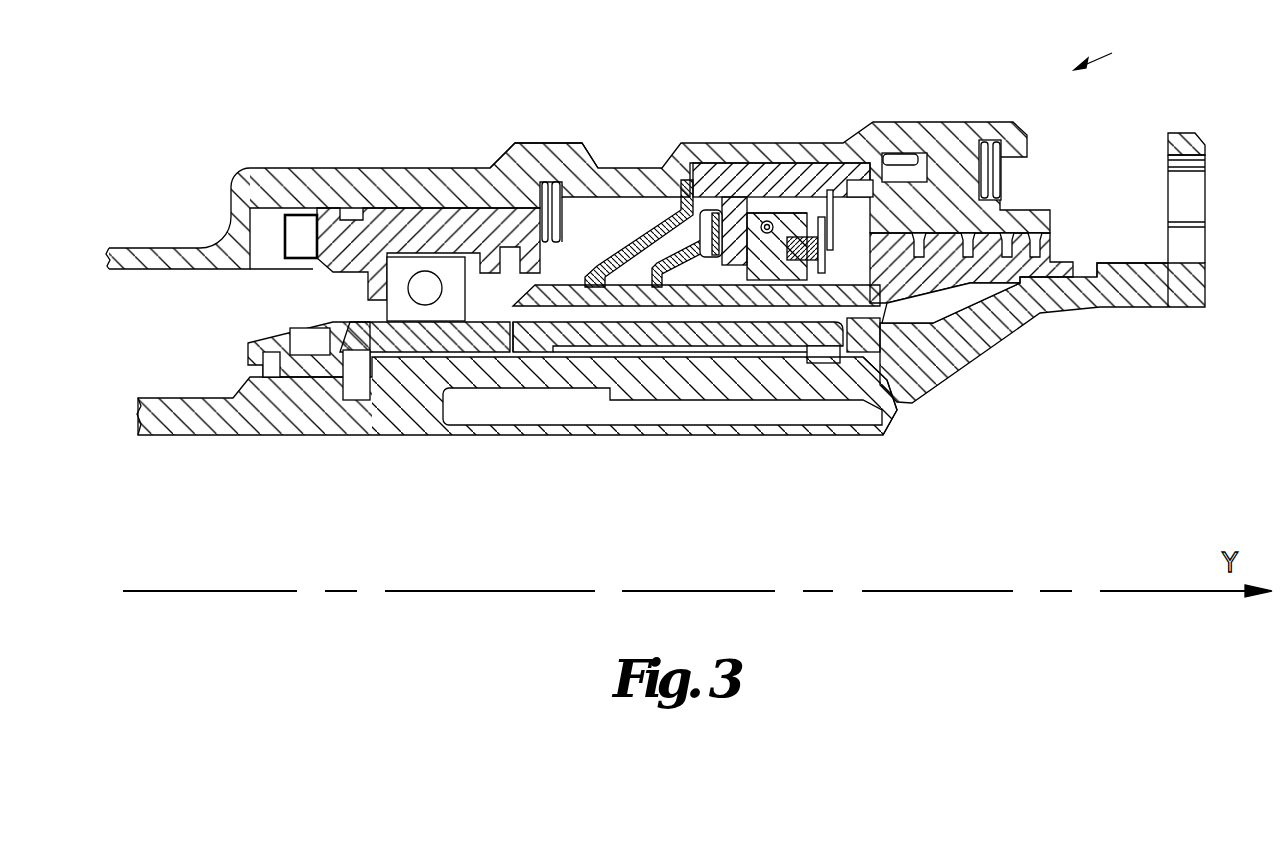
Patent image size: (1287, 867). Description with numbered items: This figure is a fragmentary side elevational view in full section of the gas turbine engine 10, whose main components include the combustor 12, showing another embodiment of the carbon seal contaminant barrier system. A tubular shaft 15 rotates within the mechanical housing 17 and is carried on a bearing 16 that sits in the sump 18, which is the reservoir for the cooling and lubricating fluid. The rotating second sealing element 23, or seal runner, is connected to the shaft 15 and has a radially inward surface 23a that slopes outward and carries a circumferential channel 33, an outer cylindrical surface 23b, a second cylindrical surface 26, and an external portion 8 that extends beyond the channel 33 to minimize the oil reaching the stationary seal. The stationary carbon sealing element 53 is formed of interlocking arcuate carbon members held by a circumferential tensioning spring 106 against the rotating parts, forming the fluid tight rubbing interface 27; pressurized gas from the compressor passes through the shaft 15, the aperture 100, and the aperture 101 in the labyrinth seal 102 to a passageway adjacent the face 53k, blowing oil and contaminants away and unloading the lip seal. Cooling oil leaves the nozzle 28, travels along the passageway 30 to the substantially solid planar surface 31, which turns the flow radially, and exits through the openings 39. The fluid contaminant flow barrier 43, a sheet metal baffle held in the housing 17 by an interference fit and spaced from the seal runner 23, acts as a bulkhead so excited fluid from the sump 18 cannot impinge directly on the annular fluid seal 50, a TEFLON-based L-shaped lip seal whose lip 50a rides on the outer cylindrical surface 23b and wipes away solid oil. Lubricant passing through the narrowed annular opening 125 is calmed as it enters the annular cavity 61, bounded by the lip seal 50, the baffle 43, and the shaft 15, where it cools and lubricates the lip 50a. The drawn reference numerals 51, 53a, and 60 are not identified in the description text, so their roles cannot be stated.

The external portion 8 is at (545, 250).
The gas turbine engine 10 is at (1109, 53).
The combustor 12 is at (697, 551).
The tubular shaft 15 is at (183, 413).
The bearing 16 is at (387, 297).
The mechanical housing 17 is at (968, 137).
The sump 18 is at (608, 238).
The second sealing element 23 is at (592, 352).
The radially inward surface 23a is at (512, 352).
The outer cylindrical surface 23b is at (563, 283).
The second cylindrical surface 26 is at (822, 278).
The rubbing interface 27 is at (840, 363).
The nozzle 28 is at (300, 368).
The passageway 30 is at (767, 353).
The planar surface 31 is at (887, 377).
The circumferential channel 33 is at (900, 160).
The openings 39 is at (890, 410).
The fluid contaminant flow barrier 43 is at (640, 222).
The annular fluid seal 50 is at (690, 182).
The lip 50a is at (683, 308).
The support plate 51 is at (650, 346).
The carbon sealing element 53 is at (800, 213).
The latch arm 53a is at (748, 212).
The face 53k is at (712, 210).
The shim 60 is at (745, 353).
The annular cavity 61 is at (654, 278).
The aperture 100 is at (953, 338).
The aperture 101 is at (1045, 313).
The labyrinth seal 102 is at (1050, 258).
The circumferential tensioning spring 106 is at (769, 221).
The narrowed annular opening 125 is at (608, 333).